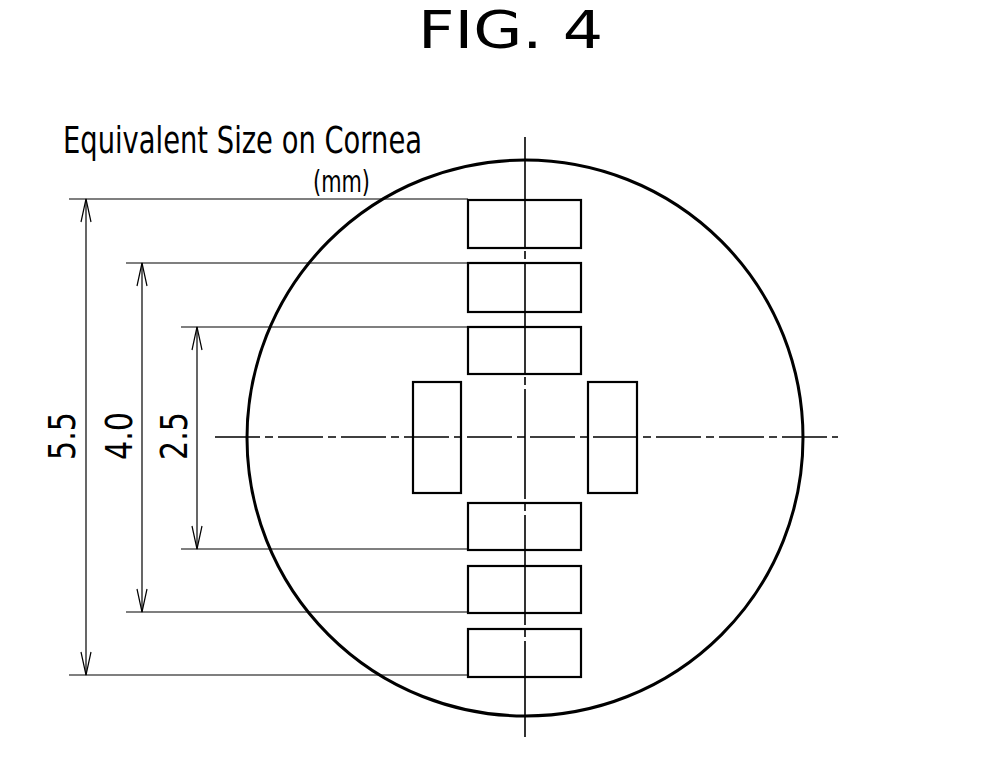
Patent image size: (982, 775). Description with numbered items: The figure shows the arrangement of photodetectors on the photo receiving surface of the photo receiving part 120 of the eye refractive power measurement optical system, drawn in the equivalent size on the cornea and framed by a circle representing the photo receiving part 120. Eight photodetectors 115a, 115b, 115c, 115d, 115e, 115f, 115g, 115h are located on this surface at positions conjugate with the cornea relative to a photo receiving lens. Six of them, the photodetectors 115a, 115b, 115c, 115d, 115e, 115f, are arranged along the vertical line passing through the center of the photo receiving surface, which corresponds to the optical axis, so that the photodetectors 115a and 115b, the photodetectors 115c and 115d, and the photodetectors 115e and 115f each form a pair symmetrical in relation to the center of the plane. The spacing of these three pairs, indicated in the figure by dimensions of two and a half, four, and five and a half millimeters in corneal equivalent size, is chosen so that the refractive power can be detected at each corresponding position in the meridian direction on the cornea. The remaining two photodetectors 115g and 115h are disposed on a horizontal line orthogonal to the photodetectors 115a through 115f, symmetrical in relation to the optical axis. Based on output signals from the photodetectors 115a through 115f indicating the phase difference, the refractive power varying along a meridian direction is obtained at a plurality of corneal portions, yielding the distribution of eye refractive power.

The photodetector 115a is at (560, 362).
The photodetector 115b is at (490, 513).
The photodetector 115c is at (560, 299).
The photodetector 115d is at (495, 577).
The photodetector 115e is at (560, 236).
The photodetector 115f is at (490, 639).
The photodetector 115g is at (427, 408).
The photodetector 115h is at (613, 478).
The photo receiving part 120 is at (799, 497).